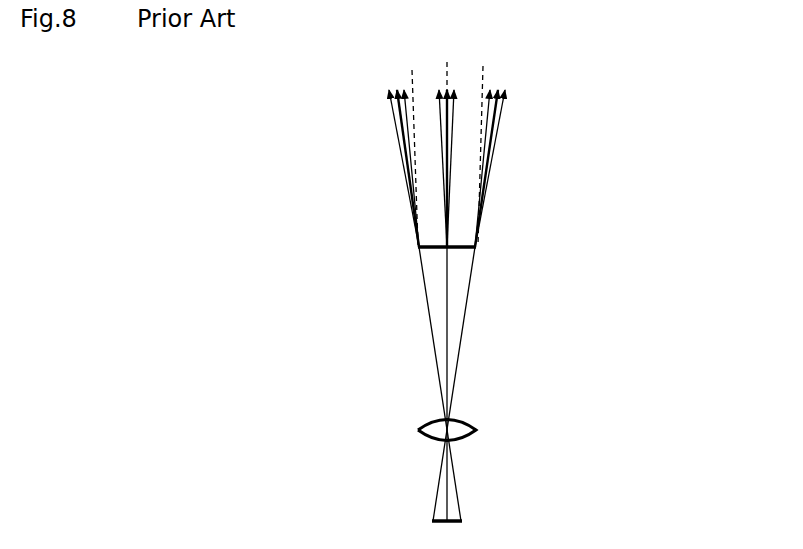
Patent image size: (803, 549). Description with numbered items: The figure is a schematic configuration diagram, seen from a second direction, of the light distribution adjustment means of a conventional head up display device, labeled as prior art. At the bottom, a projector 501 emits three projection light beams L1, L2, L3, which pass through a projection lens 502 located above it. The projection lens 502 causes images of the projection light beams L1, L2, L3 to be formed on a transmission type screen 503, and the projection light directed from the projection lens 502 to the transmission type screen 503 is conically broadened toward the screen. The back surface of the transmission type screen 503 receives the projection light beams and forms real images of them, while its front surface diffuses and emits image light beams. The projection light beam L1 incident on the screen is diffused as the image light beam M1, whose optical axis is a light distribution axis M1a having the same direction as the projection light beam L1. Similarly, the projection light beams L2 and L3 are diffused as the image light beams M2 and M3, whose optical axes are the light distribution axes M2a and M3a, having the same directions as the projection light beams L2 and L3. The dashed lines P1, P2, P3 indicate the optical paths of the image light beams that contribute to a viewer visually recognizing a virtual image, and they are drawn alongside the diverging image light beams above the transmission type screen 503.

The projector 501 is at (463, 518).
The projection lens 502 is at (477, 430).
The transmission type screen 503 is at (437, 250).
The projection light beam L1 is at (430, 323).
The projection light beam L2 is at (448, 290).
The projection light beam L3 is at (461, 337).
The image light beam M1 is at (389, 84).
The light distribution axis M1a is at (399, 102).
The image light beam M2 is at (439, 85).
The light distribution axis M2a is at (447, 147).
The image light beam M3 is at (506, 85).
The light distribution axis M3a is at (498, 102).
The optical path P1 is at (410, 68).
The optical path P2 is at (449, 69).
The optical path P3 is at (485, 65).